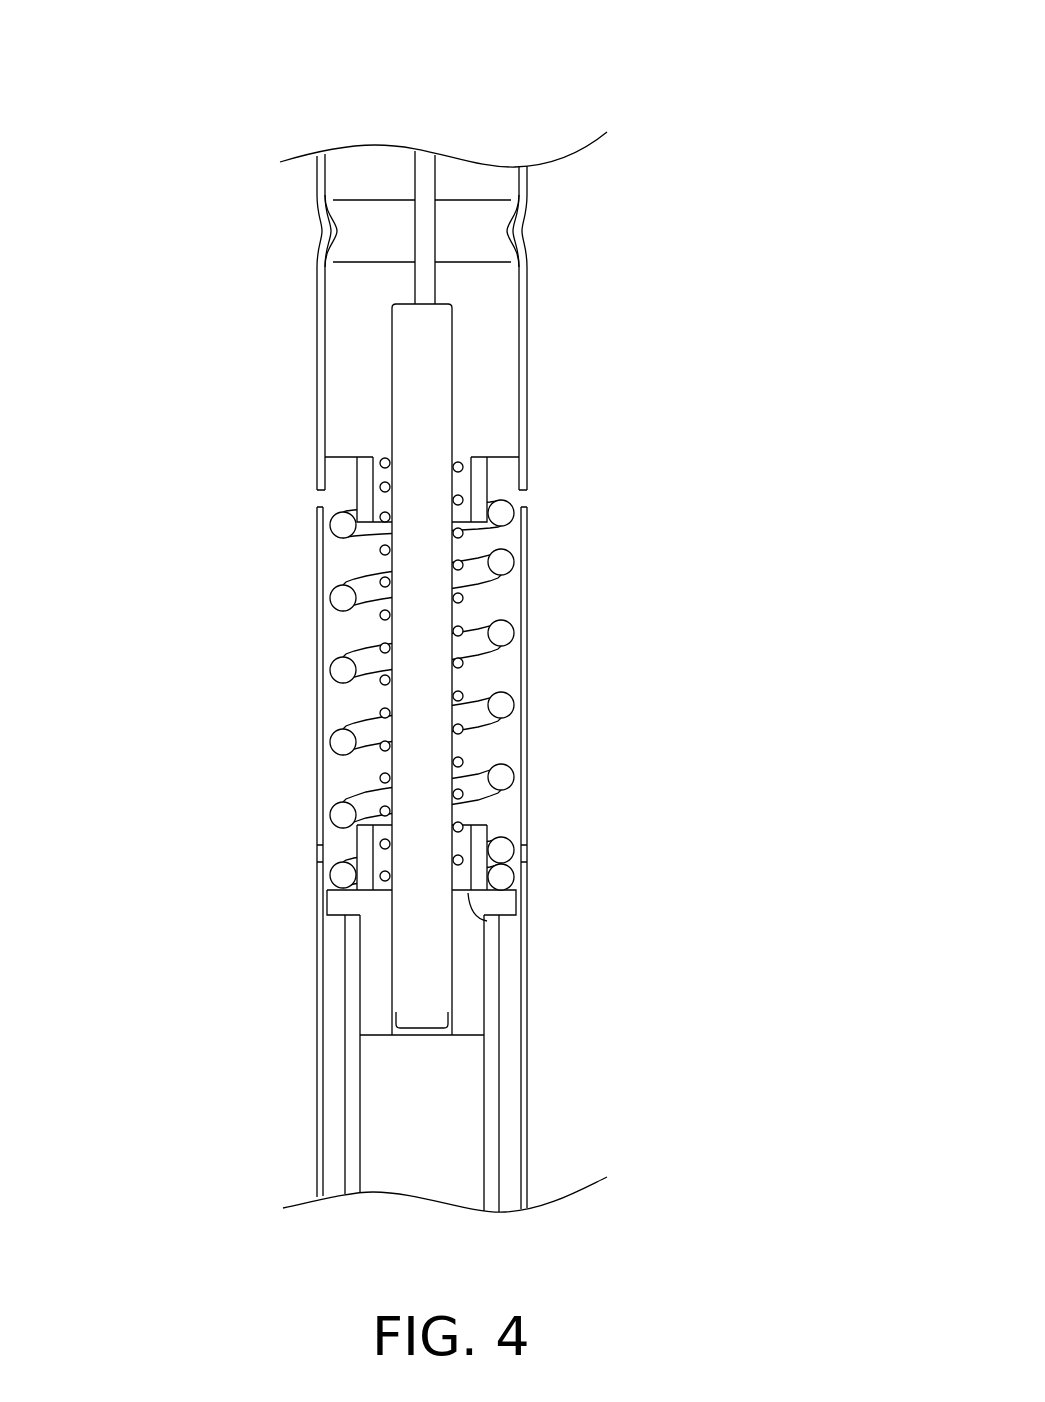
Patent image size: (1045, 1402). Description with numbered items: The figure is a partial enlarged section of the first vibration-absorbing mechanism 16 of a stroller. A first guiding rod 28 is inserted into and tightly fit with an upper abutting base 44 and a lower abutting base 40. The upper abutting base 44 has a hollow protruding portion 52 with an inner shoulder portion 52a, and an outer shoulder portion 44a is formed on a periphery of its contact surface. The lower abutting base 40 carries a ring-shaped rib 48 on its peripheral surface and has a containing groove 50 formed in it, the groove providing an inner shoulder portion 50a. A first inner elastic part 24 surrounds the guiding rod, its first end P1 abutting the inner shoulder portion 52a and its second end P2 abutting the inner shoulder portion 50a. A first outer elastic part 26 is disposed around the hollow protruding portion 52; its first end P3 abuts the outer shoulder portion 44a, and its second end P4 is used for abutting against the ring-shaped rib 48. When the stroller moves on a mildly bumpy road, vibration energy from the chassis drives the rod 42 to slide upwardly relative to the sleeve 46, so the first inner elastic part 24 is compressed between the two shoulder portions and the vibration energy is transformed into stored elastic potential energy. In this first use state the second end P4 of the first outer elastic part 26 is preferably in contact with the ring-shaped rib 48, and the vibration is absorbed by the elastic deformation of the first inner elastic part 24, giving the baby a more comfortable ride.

The first vibration-absorbing mechanism 16 is at (672, 102).
The first inner elastic part 24 is at (365, 558).
The first outer elastic part 26 is at (333, 600).
The first guiding rod 28 is at (410, 370).
The lower abutting base 40 is at (373, 886).
The rod 42 is at (490, 960).
The upper abutting base 44 is at (358, 297).
The outer shoulder portion 44a is at (503, 462).
The sleeve 46 is at (318, 1025).
The ring-shaped rib 48 is at (337, 902).
The containing groove 50 is at (378, 832).
The inner shoulder portion 50a is at (487, 921).
The hollow protruding portion 52 is at (367, 485).
The inner shoulder portion 52a is at (460, 457).
The first end P1 is at (385, 460).
The second end P2 is at (360, 884).
The first end P3 is at (502, 512).
The second end P4 is at (505, 877).